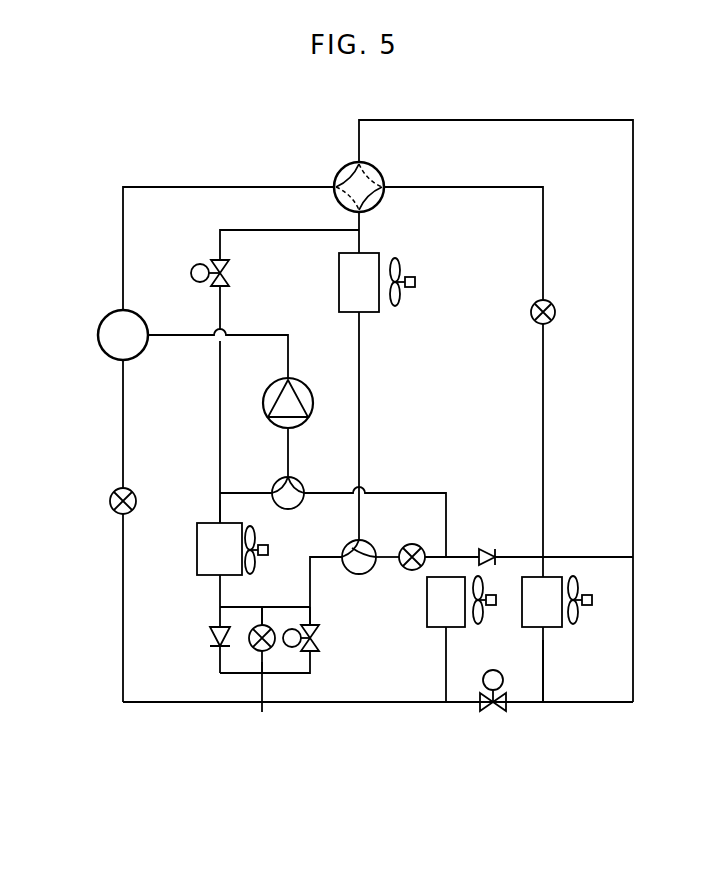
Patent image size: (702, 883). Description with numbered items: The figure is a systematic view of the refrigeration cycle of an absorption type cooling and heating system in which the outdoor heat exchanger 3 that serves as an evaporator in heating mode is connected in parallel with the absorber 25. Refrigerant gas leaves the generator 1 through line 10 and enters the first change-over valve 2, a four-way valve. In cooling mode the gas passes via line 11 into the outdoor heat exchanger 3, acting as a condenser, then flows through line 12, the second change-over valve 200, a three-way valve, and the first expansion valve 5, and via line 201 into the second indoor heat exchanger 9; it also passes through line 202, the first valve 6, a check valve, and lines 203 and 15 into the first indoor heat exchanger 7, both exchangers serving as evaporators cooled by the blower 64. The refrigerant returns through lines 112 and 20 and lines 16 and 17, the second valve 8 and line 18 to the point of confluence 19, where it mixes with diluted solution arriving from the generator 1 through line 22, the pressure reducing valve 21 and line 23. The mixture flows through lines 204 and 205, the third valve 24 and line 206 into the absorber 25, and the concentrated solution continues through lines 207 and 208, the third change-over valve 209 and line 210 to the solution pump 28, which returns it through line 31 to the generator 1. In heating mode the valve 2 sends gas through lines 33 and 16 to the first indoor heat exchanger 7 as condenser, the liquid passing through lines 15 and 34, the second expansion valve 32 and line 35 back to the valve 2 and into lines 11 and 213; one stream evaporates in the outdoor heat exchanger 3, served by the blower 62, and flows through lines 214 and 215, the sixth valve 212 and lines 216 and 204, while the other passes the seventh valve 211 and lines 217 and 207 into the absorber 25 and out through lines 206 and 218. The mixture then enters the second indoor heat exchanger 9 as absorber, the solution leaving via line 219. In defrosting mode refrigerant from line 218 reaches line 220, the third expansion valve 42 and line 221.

The generator 1 is at (98, 330).
The first change-over valve 2 is at (340, 174).
The outdoor heat exchanger 3 is at (339, 283).
The first expansion valve 5 is at (401, 548).
The first valve 6 is at (488, 565).
The first indoor heat exchanger 7 is at (548, 628).
The second valve 8 is at (497, 706).
The second indoor heat exchanger 9 is at (427, 608).
The line 10 is at (234, 187).
The line 11 is at (359, 240).
The line 12 is at (359, 362).
The line 15 is at (545, 566).
The line 16 is at (543, 675).
The line 17 is at (521, 702).
The line 18 is at (469, 702).
The point of confluence 19 is at (262, 712).
The line 20 is at (410, 702).
The pressure reducing valve 21 is at (110, 501).
The line 22 is at (123, 415).
The line 23 is at (123, 571).
The third valve 24 is at (210, 637).
The absorber 25 is at (197, 545).
The solution pump 28 is at (264, 403).
The line 31 is at (288, 360).
The second expansion valve 32 is at (555, 312).
The line 33 is at (488, 120).
The line 34 is at (543, 430).
The line 35 is at (457, 187).
The third expansion valve 42 is at (254, 646).
The blower 62 is at (252, 540).
The blower 64 is at (405, 273).
The line 112 is at (446, 665).
The second change-over valve 200 is at (346, 550).
The line 201 is at (418, 544).
The line 202 is at (460, 556).
The line 203 is at (521, 548).
The line 204 is at (260, 682).
The line 205 is at (218, 673).
The line 206 is at (219, 604).
The line 207 is at (220, 513).
The line 208 is at (246, 493).
The third change-over valve 209 is at (290, 487).
The line 210 is at (288, 450).
The seventh valve 211 is at (206, 264).
The sixth valve 212 is at (318, 643).
The line 213 is at (300, 230).
The line 214 is at (312, 590).
The line 215 is at (312, 613).
The line 216 is at (302, 677).
The line 217 is at (220, 399).
The line 218 is at (232, 607).
The line 219 is at (447, 501).
The line 220 is at (262, 607).
The line 221 is at (263, 664).